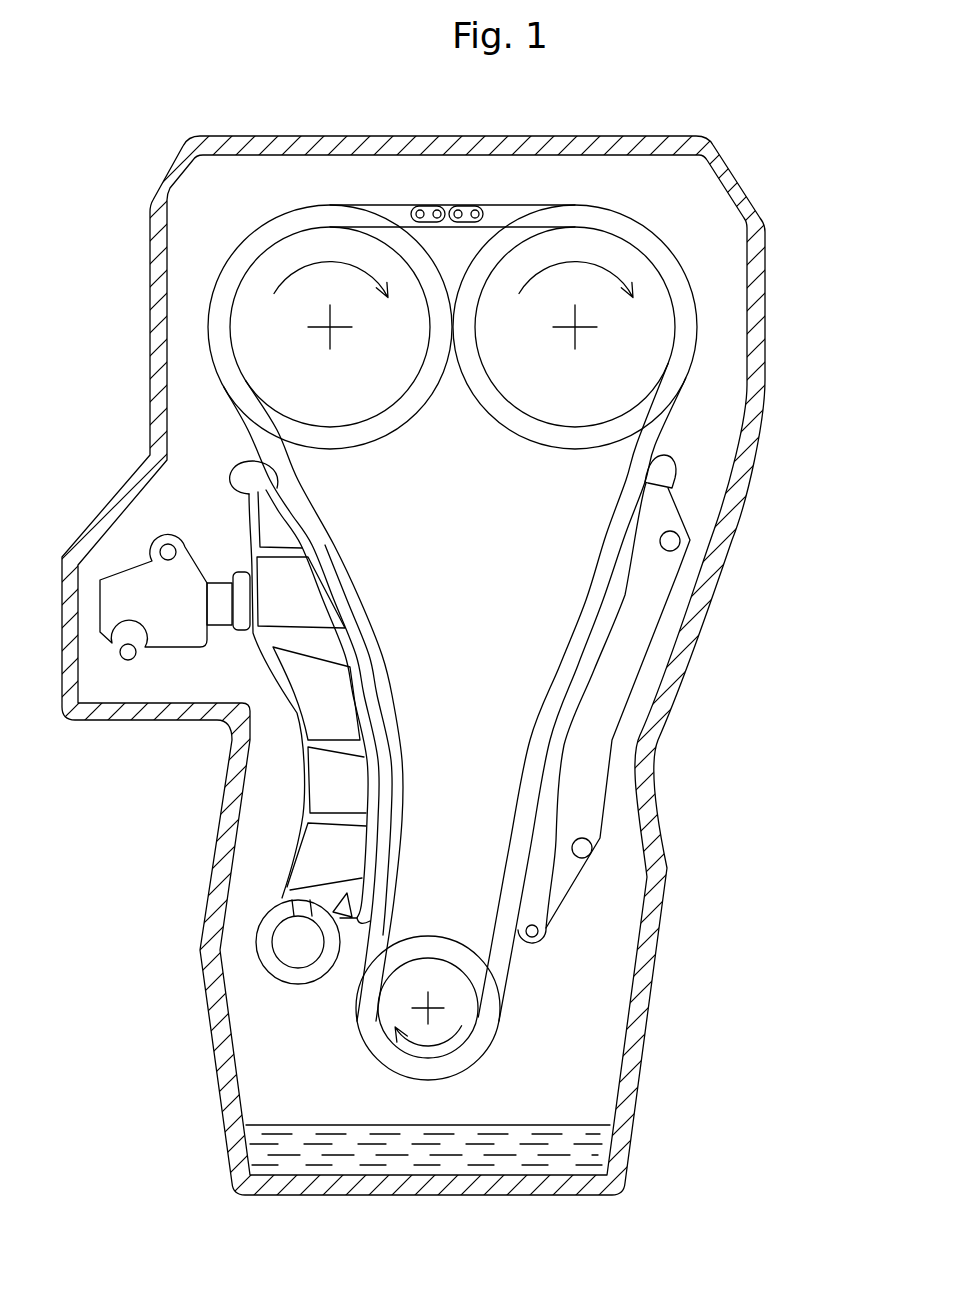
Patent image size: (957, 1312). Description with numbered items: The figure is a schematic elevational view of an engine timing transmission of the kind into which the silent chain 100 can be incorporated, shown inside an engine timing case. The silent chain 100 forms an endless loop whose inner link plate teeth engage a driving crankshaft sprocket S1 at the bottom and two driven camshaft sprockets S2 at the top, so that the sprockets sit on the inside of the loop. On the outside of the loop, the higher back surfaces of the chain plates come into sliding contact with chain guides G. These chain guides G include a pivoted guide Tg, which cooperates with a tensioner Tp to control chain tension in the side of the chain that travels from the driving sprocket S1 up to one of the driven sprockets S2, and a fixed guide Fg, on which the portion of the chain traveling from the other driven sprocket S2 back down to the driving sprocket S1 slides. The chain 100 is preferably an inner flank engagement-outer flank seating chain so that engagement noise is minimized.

The silent chain 100 is at (670, 393).
The driving crankshaft sprocket S1 is at (467, 1010).
The driven camshaft sprockets S2 is at (347, 404).
The tensioner Tp is at (130, 583).
The pivoted guide Tg is at (315, 688).
The fixed guide Fg is at (623, 655).
The chain guides G is at (489, 719).